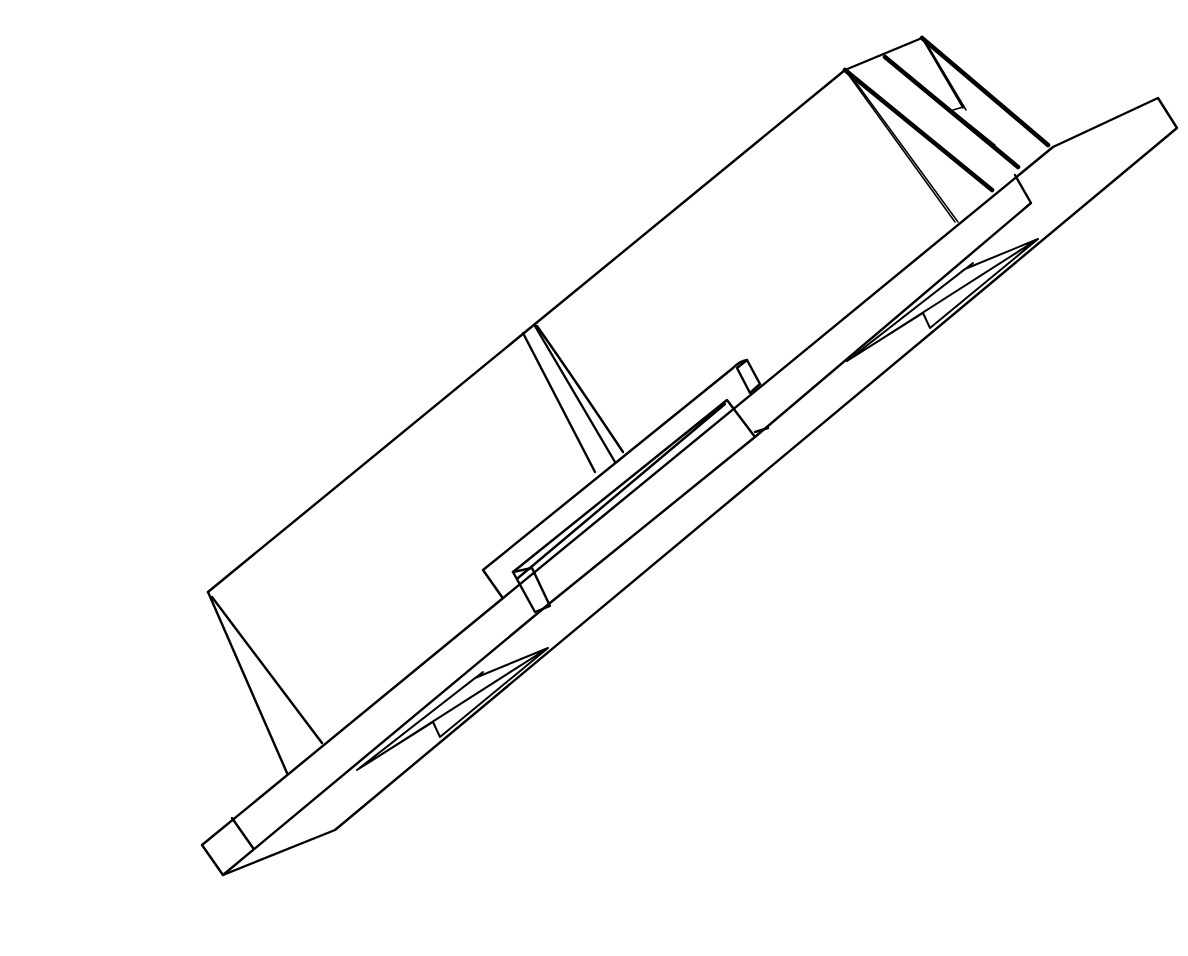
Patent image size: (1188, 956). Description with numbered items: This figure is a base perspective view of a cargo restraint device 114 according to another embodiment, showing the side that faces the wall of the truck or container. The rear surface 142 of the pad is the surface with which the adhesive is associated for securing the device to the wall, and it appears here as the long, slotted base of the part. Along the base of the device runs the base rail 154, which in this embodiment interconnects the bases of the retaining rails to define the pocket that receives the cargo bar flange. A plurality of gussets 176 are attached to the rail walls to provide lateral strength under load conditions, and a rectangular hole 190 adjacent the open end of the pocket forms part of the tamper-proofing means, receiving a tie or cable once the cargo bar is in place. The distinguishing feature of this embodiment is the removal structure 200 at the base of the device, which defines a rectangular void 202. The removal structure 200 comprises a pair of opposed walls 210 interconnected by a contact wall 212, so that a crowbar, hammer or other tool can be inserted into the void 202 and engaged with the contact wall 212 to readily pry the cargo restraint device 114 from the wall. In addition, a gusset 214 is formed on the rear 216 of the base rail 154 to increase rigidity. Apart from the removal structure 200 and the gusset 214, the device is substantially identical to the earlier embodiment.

The cargo restraint device 114 is at (308, 122).
The rear surface 142 is at (1058, 211).
The base rail 154 is at (745, 173).
The gusset 176 is at (268, 703).
The rectangular hole 190 is at (915, 47).
The removal structure 200 is at (698, 384).
The rectangular void 202 is at (663, 455).
The opposed wall 210 is at (505, 596).
The contact wall 212 is at (512, 557).
The gusset 214 is at (580, 398).
The rear of the base rail 216 is at (313, 524).